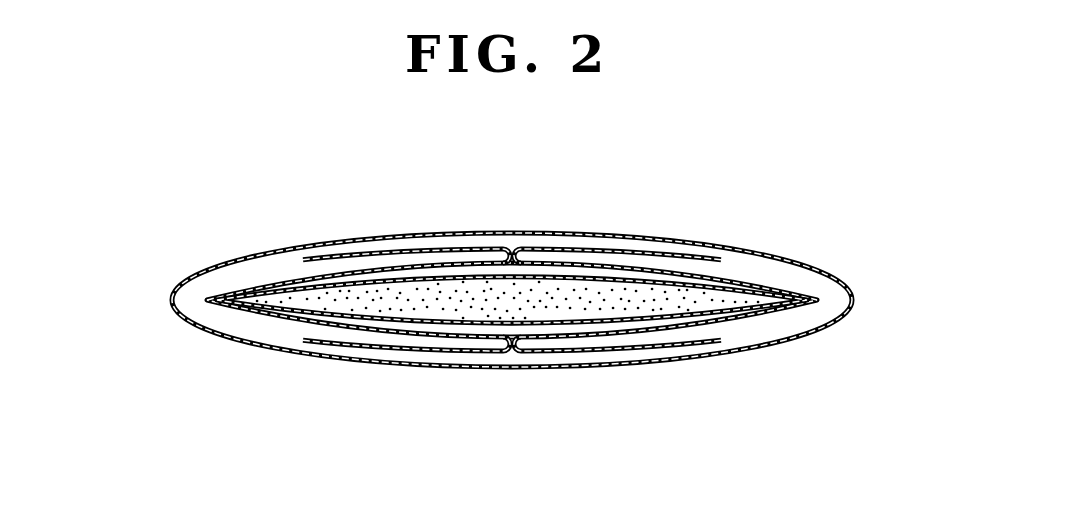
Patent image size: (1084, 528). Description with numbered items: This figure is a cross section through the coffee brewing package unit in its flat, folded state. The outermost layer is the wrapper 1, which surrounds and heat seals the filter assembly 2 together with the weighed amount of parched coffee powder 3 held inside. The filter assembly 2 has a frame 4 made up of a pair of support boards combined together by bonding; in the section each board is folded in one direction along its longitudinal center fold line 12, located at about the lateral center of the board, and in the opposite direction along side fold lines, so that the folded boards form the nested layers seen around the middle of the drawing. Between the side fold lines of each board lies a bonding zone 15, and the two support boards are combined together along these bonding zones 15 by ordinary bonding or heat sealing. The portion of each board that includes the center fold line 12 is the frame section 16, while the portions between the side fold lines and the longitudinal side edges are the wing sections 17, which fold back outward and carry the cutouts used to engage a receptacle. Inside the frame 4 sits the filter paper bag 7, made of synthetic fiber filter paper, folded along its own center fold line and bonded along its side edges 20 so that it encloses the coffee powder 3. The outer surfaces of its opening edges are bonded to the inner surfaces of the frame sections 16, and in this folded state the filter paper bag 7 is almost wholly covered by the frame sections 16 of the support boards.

The wrapper 1 is at (722, 238).
The filter assembly 2 is at (264, 278).
The parched coffee powder 3 is at (544, 306).
The frame 4 is at (750, 327).
The filter paper bag 7 is at (343, 352).
The center fold line 12 is at (172, 292).
The bonding zone 15 is at (500, 247).
The frame section 16 is at (748, 282).
The wing section 17 is at (378, 253).
The side edge 20 is at (213, 303).